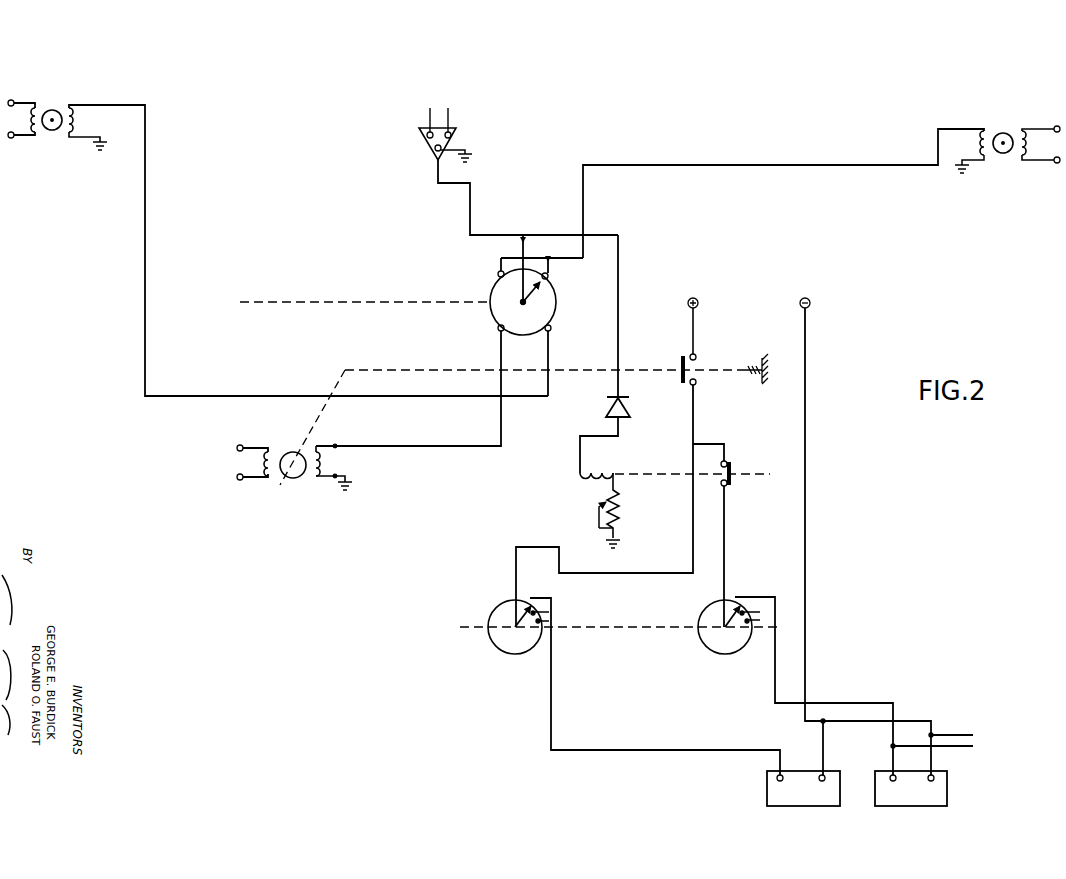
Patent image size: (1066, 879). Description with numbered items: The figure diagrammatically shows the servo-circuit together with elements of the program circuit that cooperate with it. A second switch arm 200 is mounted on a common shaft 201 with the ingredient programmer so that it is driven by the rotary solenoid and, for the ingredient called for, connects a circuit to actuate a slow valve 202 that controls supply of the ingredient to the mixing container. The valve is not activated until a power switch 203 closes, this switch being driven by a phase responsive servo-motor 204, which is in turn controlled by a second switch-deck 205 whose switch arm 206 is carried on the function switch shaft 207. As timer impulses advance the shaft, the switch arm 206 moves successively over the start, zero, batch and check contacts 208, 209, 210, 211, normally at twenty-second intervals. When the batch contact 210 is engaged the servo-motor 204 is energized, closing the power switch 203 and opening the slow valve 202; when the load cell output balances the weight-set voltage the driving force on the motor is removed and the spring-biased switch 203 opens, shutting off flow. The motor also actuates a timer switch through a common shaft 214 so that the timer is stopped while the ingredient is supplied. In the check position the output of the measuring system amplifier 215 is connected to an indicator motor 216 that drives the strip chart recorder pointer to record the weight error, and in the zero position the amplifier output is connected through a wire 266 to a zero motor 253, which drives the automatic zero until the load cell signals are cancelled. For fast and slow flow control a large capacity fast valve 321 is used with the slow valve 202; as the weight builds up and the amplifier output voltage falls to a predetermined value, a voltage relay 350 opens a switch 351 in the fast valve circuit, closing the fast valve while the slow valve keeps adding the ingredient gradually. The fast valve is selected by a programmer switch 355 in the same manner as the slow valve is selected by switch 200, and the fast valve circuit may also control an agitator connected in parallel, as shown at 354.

The zero motor 253 is at (278, 248).
The measuring system amplifier 215 is at (500, 141).
The indicator motor 216 is at (821, 180).
The second switch-deck 205 is at (489, 316).
The switch arm 206 is at (538, 292).
The function switch shaft 207 is at (360, 304).
The start contact 208 is at (549, 276).
The zero contact 209 is at (552, 328).
The batch contact 210 is at (498, 330).
The check contact 211 is at (496, 274).
The wire 266 is at (515, 398).
The common shaft 214 is at (416, 370).
The phase responsive servo-motor 204 is at (292, 452).
The power switch 203 is at (689, 356).
The voltage relay 350 is at (600, 472).
The switch 351 is at (730, 462).
The common shaft 201 is at (463, 633).
The second switch arm 200 is at (523, 652).
The programmer switch 355 is at (731, 652).
The agitator circuit 354 is at (948, 743).
The slow valve 202 is at (767, 773).
The fast valve 321 is at (947, 790).